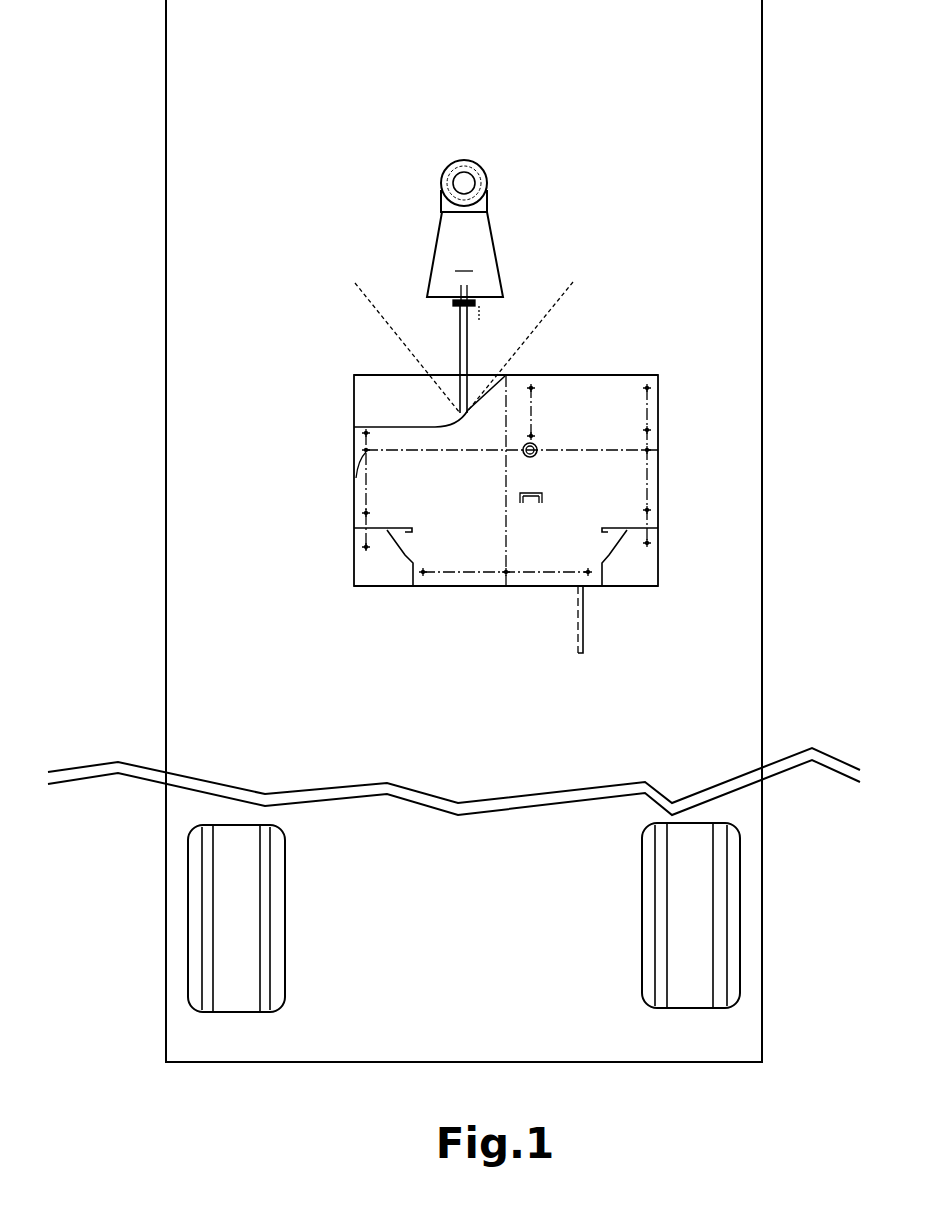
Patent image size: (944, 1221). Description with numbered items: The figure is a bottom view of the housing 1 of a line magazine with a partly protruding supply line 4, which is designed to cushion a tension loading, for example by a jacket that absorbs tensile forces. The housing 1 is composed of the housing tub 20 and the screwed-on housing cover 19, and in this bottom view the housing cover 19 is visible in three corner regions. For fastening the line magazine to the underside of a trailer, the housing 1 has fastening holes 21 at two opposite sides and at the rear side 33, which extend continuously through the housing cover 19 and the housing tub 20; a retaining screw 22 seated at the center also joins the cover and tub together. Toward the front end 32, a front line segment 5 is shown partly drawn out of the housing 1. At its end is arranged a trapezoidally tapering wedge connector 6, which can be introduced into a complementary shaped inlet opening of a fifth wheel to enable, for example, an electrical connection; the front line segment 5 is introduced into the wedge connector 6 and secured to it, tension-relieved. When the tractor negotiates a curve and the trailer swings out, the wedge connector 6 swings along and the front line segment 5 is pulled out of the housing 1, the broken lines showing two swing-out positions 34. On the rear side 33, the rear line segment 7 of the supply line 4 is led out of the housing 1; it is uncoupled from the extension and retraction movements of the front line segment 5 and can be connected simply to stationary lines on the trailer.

The housing 1 is at (350, 628).
The supply line 4 is at (474, 356).
The front line segment 5 is at (460, 337).
The wedge connector 6 is at (465, 233).
The rear line segment 7 is at (583, 615).
The housing cover 19 is at (367, 400).
The housing tub 20 is at (613, 410).
The fastening holes 21 is at (355, 482).
The retaining screw 22 is at (535, 453).
The front end 32 is at (640, 375).
The rear side 33 is at (530, 597).
The swing-out positions 34 is at (358, 290).